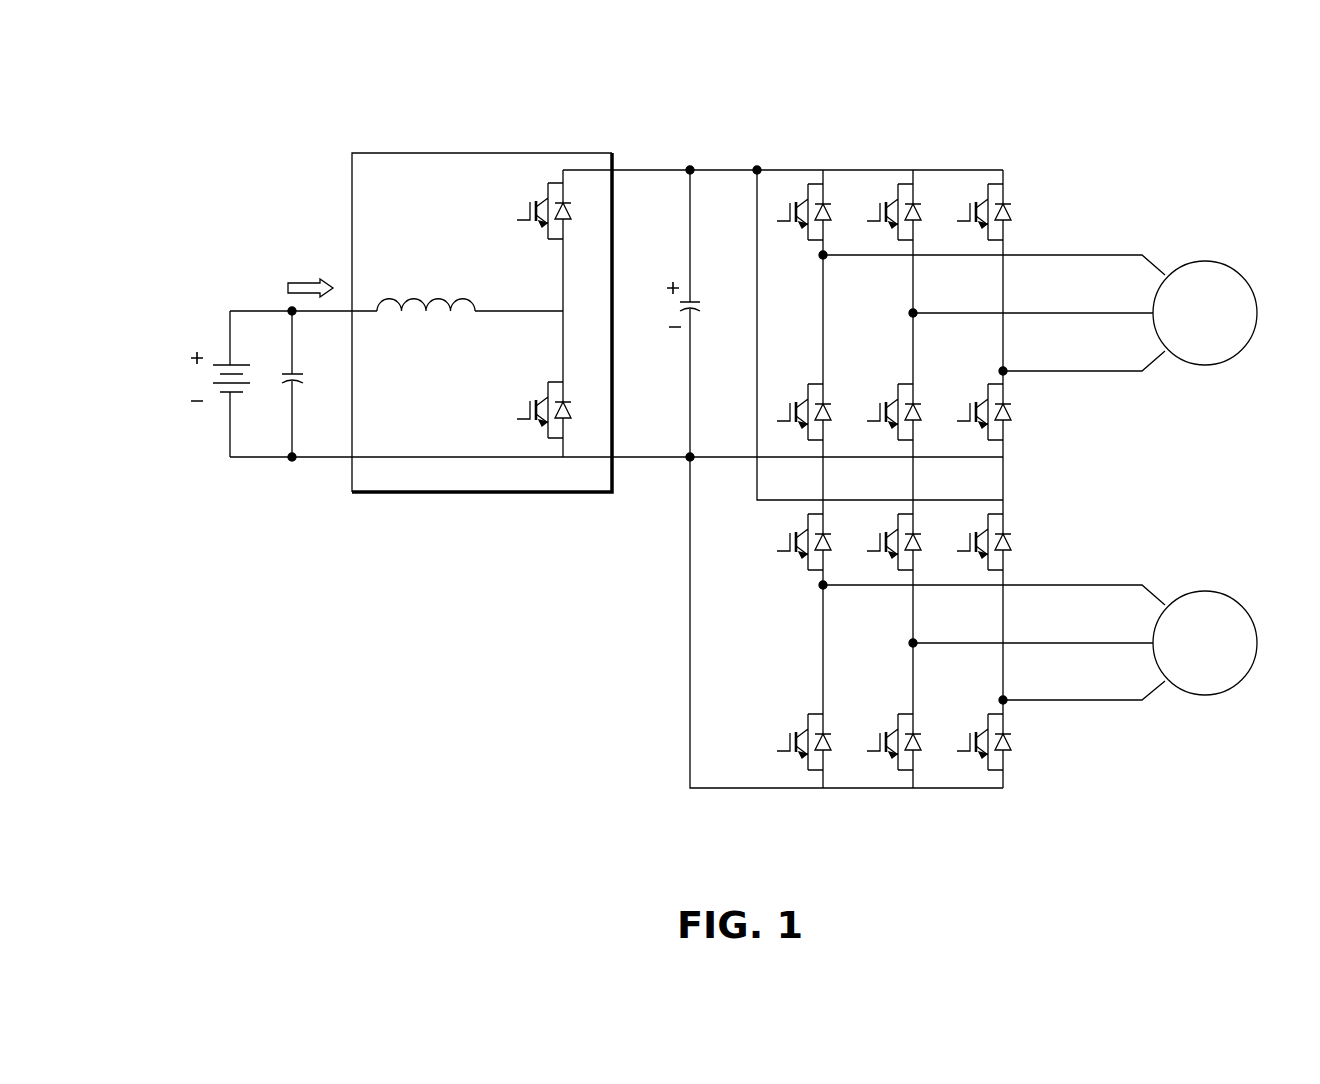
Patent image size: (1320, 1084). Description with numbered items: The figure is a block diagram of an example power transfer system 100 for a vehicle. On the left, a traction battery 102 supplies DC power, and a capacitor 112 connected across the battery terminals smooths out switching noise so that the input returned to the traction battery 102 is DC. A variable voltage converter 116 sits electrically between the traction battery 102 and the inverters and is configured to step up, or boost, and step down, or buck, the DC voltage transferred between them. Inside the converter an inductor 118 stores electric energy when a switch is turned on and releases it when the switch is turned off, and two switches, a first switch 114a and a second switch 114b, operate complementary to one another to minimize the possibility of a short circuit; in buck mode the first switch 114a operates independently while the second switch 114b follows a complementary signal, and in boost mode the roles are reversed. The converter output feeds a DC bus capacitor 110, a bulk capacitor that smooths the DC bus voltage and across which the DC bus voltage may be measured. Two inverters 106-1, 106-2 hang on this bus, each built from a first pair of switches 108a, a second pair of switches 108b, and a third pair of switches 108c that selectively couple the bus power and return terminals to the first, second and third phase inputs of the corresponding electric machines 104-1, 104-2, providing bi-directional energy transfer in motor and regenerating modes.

The power transfer system 100 is at (1195, 133).
The traction battery 102 is at (223, 362).
The electric machine 104-1 is at (1175, 342).
The electric machine 104-2 is at (1175, 672).
The inverter 106-1 is at (830, 110).
The inverter 106-2 is at (828, 857).
The first pair of switches 108a is at (797, 204).
The second pair of switches 108b is at (888, 204).
The third pair of switches 108c is at (979, 204).
The DC bus capacitor 110 is at (693, 302).
The capacitor 112 is at (296, 374).
The switch S1 114a is at (528, 222).
The switch S2 114b is at (517, 419).
The variable voltage converter 116 is at (409, 246).
The inductor 118 is at (437, 301).